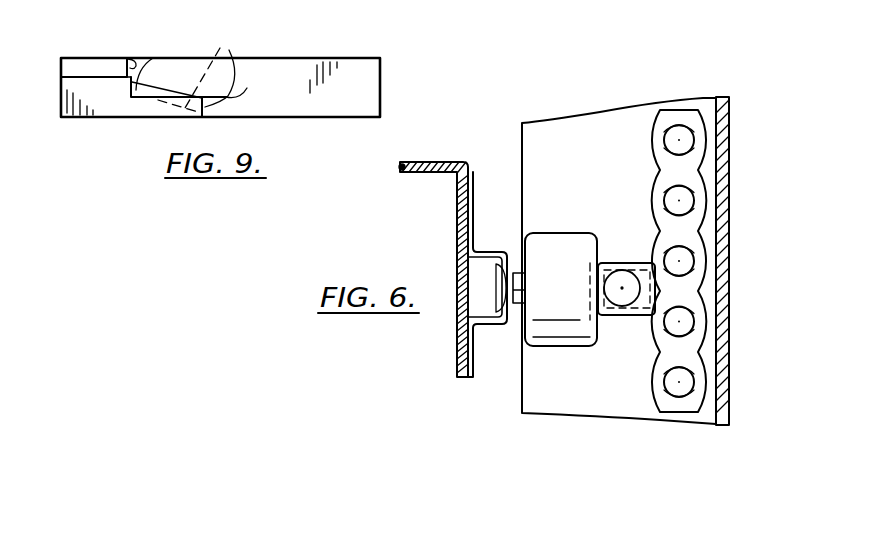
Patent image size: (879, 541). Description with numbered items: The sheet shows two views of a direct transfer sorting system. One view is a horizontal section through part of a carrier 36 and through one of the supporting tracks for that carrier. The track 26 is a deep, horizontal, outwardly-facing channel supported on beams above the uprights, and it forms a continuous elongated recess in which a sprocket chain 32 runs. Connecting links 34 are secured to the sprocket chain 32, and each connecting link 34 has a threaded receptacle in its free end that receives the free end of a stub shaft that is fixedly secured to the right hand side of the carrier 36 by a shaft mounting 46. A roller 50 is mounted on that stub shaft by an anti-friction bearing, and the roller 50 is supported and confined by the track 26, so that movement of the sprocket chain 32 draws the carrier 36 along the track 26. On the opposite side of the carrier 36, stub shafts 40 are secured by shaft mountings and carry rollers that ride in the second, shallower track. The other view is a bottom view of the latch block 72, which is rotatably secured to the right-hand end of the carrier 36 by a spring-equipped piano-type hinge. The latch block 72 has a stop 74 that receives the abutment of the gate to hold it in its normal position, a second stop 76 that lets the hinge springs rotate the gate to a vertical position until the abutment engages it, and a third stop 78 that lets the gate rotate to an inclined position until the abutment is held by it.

In FIG. 6, the track 26 is at (723, 426).
In FIG. 6, the sprocket chain 32 is at (676, 110).
In FIG. 6, the connecting link 34 is at (631, 320).
In FIG. 6, the carrier 36 is at (431, 159).
In FIG. 6, the stub shaft 40 is at (527, 292).
In FIG. 6, the shaft mounting 46 is at (491, 246).
In FIG. 6, the roller 50 is at (558, 242).
In FIG. 9, the latch block 72 is at (281, 57).
In FIG. 9, the stop 74 is at (229, 58).
In FIG. 9, the second stop 76 is at (153, 58).
In FIG. 9, the third stop 78 is at (134, 58).